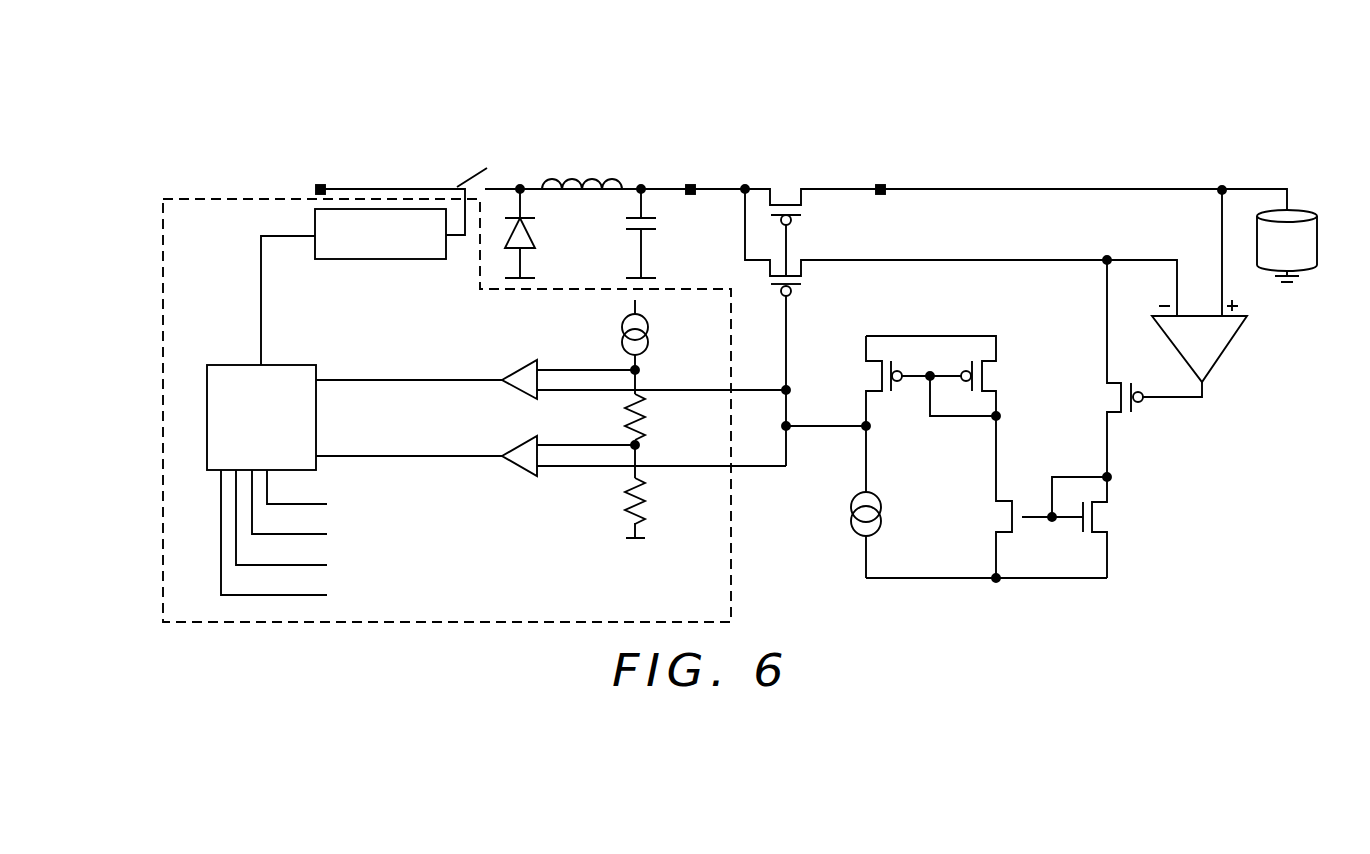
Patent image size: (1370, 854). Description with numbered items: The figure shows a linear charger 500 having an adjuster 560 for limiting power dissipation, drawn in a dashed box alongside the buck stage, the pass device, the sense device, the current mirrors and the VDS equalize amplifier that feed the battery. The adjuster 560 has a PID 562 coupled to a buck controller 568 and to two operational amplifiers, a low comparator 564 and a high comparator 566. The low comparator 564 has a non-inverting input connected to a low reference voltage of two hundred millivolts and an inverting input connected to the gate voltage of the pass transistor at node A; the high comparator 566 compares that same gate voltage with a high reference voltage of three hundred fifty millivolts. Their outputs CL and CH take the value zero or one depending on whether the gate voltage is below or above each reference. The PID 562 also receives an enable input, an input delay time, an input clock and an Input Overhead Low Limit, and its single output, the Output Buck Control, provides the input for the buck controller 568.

The linear charger 500 is at (308, 78).
The adjuster 560 is at (193, 199).
The PID 562 is at (295, 364).
The low comparator 564 is at (518, 444).
The high comparator 566 is at (518, 368).
The buck controller 568 is at (315, 215).